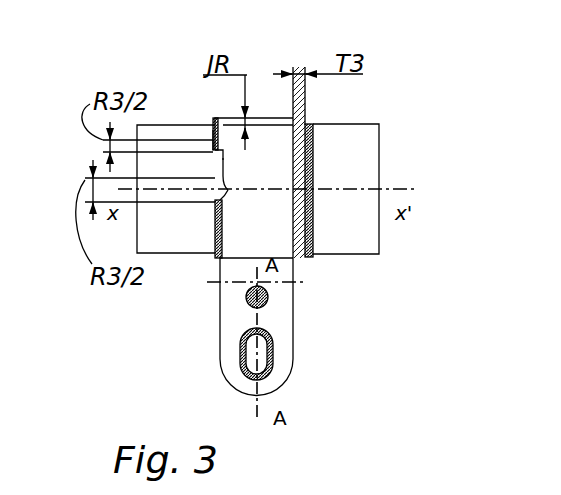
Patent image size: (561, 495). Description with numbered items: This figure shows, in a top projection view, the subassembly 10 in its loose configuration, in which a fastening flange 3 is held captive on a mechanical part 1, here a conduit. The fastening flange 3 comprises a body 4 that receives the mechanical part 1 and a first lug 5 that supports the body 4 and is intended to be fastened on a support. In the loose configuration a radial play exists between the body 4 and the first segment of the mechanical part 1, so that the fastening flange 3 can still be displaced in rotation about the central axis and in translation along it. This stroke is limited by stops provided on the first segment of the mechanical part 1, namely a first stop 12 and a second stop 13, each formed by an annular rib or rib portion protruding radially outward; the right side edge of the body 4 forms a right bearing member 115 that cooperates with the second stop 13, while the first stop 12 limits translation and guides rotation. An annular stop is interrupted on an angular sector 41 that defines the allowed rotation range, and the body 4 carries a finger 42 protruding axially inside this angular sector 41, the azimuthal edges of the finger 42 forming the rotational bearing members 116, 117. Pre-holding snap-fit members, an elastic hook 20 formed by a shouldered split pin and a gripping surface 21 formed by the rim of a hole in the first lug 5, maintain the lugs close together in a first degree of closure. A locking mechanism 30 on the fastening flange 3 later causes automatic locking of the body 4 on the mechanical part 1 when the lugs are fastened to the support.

The mechanical part 1 is at (158, 259).
The fastening flange 3 is at (217, 339).
The body 4 is at (262, 130).
The first lug 5 is at (277, 318).
The subassembly 10 is at (369, 91).
The first stop 12 is at (212, 258).
The second stop 13 is at (313, 222).
The elastic hook 20 is at (323, 293).
The gripping surface 21 is at (271, 297).
The locking mechanism 30 is at (277, 357).
The angular sector 41 is at (211, 137).
The finger 42 is at (222, 168).
The right bearing member 115 is at (297, 172).
The bearing member 116 is at (227, 193).
The bearing member 117 is at (207, 152).